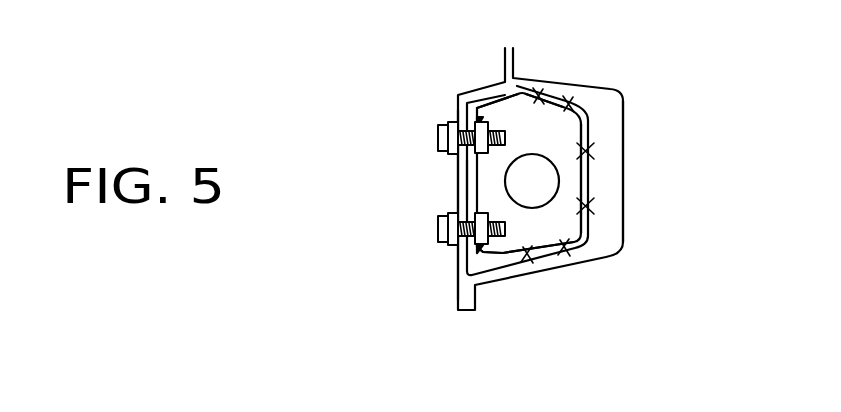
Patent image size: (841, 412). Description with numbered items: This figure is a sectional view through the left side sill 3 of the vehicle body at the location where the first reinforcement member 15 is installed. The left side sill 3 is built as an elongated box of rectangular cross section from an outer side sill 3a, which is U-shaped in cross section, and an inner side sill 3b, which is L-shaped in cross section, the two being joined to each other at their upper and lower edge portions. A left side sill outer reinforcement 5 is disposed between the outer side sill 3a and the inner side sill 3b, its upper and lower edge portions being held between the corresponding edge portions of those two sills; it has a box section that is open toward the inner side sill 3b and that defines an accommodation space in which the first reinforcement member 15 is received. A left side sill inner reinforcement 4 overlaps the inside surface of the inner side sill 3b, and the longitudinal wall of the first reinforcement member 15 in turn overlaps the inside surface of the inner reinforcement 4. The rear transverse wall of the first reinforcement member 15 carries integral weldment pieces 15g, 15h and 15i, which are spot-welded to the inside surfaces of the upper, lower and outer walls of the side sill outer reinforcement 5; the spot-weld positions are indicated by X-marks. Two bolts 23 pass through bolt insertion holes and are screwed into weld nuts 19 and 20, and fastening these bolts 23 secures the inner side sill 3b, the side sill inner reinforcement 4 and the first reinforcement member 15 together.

The left side sill 3 is at (634, 90).
The outer side sill 3a is at (624, 243).
The inner side sill 3b is at (457, 170).
The left side sill inner reinforcement 4 is at (458, 190).
The left side sill outer reinforcement 5 is at (598, 174).
The first reinforcement member 15 is at (538, 178).
The weldment piece 15g is at (555, 100).
The weldment piece 15h is at (548, 257).
The weldment piece 15i is at (585, 190).
The weld nut 19 is at (480, 117).
The weld nut 20 is at (485, 254).
The bolt 23 is at (437, 124).